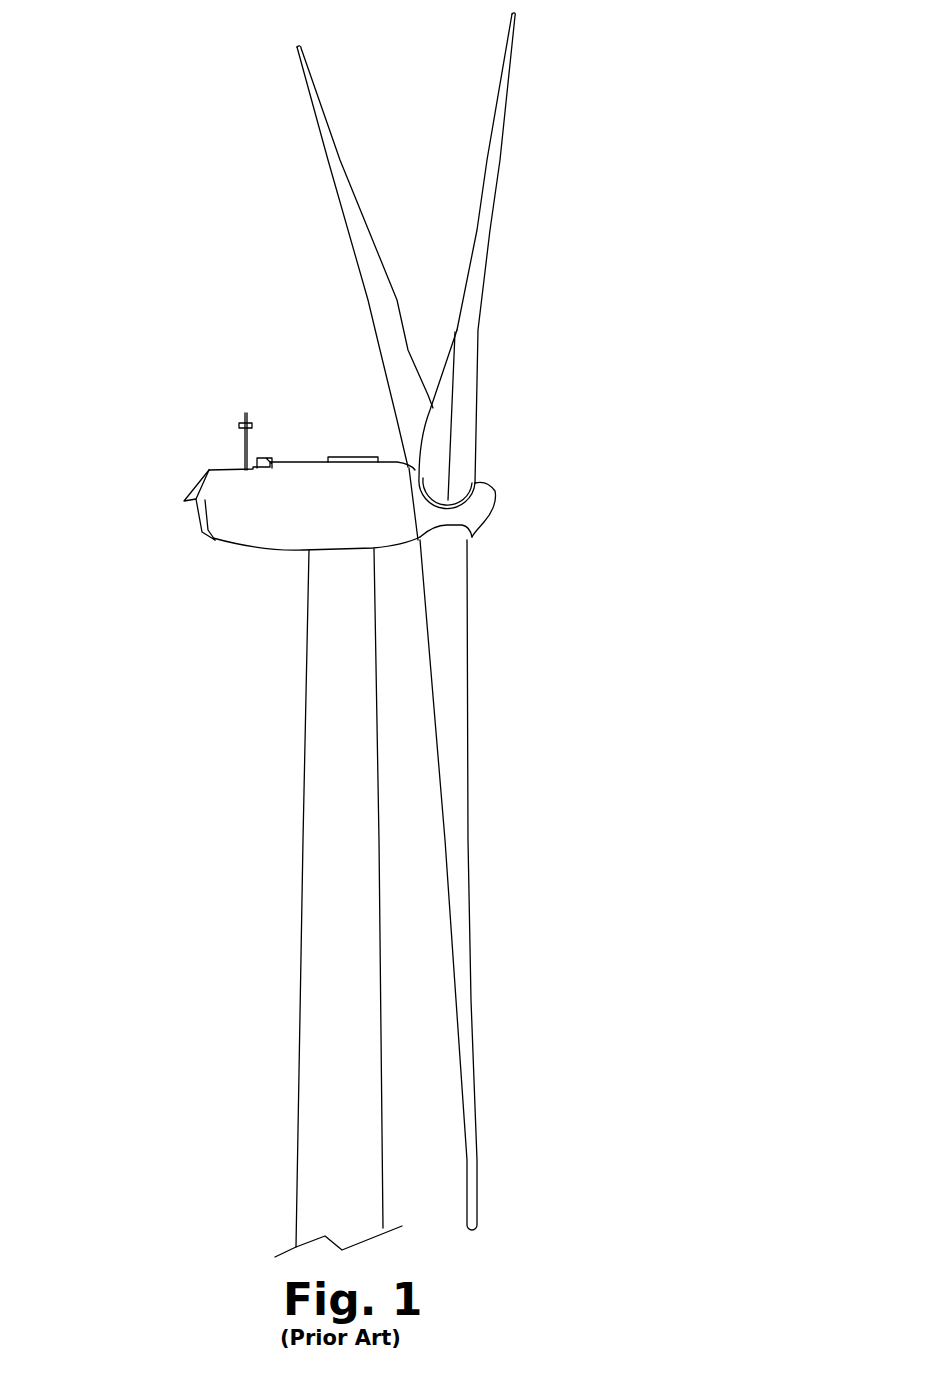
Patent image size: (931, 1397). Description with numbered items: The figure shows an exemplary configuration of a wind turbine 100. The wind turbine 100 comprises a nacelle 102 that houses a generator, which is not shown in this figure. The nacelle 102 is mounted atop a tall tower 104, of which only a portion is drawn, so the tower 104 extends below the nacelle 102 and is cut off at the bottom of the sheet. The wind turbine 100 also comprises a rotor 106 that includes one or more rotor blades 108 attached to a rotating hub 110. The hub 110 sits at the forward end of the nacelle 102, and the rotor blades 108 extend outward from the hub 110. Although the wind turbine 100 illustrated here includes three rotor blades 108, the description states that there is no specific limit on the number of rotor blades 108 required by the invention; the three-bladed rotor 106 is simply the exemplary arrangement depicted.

The wind turbine 100 is at (166, 227).
The nacelle 102 is at (255, 547).
The tower 104 is at (305, 772).
The rotor 106 is at (553, 258).
The rotor blades 108 is at (323, 113).
The rotating hub 110 is at (487, 522).